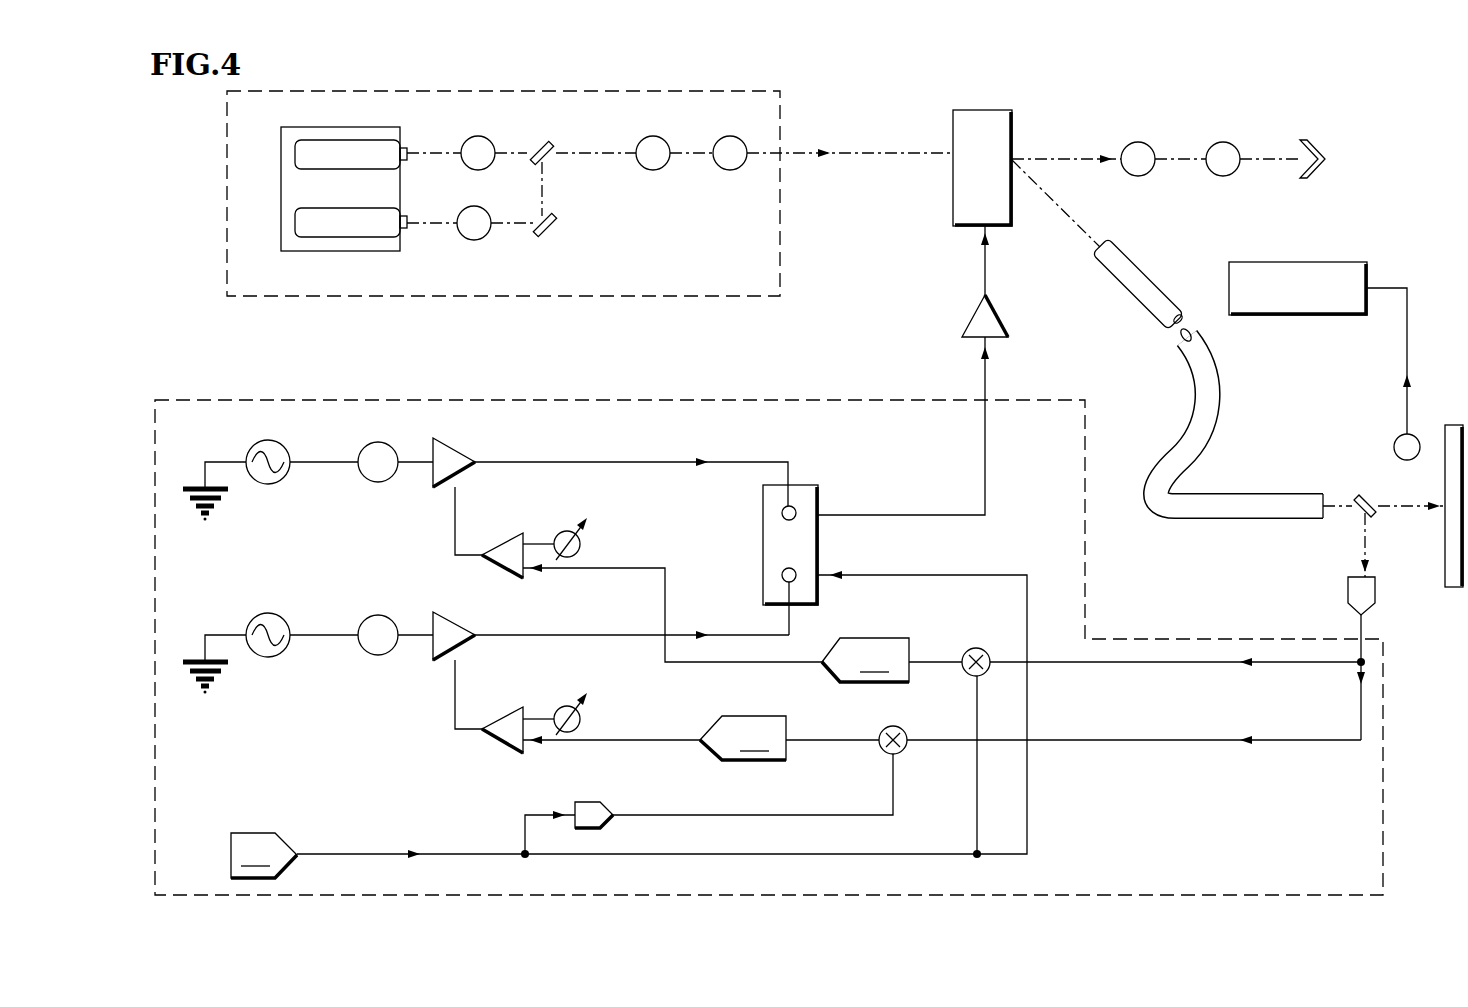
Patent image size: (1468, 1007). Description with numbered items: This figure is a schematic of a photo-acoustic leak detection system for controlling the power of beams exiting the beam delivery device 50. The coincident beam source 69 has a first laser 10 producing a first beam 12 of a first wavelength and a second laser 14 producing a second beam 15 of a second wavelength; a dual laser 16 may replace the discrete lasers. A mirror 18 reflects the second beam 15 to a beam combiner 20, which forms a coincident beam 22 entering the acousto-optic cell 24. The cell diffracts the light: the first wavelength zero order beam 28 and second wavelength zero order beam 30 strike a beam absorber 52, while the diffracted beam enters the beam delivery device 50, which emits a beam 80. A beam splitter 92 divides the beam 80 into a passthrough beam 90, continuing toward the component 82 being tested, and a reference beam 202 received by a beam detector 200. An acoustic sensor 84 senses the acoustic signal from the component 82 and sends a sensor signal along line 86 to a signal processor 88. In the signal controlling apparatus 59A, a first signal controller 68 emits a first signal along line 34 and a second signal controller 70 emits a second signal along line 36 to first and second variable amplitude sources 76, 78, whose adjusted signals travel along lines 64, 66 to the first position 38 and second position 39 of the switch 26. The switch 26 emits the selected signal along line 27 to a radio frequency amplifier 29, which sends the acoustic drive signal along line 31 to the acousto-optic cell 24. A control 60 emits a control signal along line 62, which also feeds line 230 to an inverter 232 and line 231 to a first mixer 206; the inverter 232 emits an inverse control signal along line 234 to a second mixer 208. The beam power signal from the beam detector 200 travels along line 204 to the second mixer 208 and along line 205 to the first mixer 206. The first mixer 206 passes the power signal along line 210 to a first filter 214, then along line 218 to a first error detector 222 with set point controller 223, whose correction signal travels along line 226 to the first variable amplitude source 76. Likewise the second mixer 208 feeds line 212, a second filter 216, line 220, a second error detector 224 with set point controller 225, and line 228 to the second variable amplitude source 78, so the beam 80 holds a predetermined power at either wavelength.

The first laser 10 is at (352, 150).
The first beam 12 is at (428, 158).
The second laser 14 is at (324, 230).
The second beam 15 is at (436, 226).
The dual laser 16 is at (290, 186).
The mirror 18 is at (554, 234).
The beam combiner 20 is at (541, 139).
The coincident beam 22 is at (766, 156).
The acousto-optic cell 24 is at (975, 110).
The switch 26 is at (763, 542).
The line 27 is at (988, 374).
The first wavelength zero order beam 28 is at (1062, 158).
The radio frequency amplifier 29 is at (1000, 316).
The second wavelength zero order beam 30 is at (1227, 159).
The line 31 is at (985, 270).
The line 34 is at (300, 464).
The line 36 is at (300, 637).
The first position 38 is at (782, 510).
The second position 39 is at (782, 580).
The beam delivery device 50 is at (1133, 272).
The beam absorber 52 is at (1323, 144).
The signal controlling apparatus 59A is at (232, 400).
The control 60 is at (264, 855).
The line 62 is at (385, 856).
The line 64 is at (648, 460).
The line 66 is at (648, 634).
The first signal controller 68 is at (257, 442).
The coincident beam source 69 is at (335, 90).
The second signal controller 70 is at (257, 615).
The first variable amplitude source 76 is at (455, 447).
The second variable amplitude source 78 is at (455, 620).
The beam 80 is at (1343, 500).
The component 82 is at (1455, 425).
The acoustic sensor 84 is at (1398, 438).
The line 86 is at (1405, 290).
The signal processor 88 is at (1286, 262).
The passthrough beam 90 is at (1405, 504).
The beam splitter 92 is at (1368, 496).
The beam detector 200 is at (1352, 612).
The reference beam 202 is at (1366, 546).
The line 204 is at (1282, 740).
The line 205 is at (1280, 663).
The first mixer 206 is at (963, 650).
The second mixer 208 is at (897, 724).
The line 210 is at (932, 660).
The line 212 is at (800, 738).
The first filter 214 is at (865, 660).
The second filter 216 is at (743, 738).
The line 218 is at (790, 660).
The line 220 is at (648, 738).
The first error detector 222 is at (500, 572).
The set point controller 223 is at (560, 530).
The second error detector 224 is at (497, 737).
The set point controller 225 is at (560, 706).
The line 226 is at (455, 510).
The line 228 is at (455, 688).
The line 230 is at (548, 813).
The line 231 is at (975, 802).
The inverter 232 is at (588, 800).
The line 234 is at (820, 815).